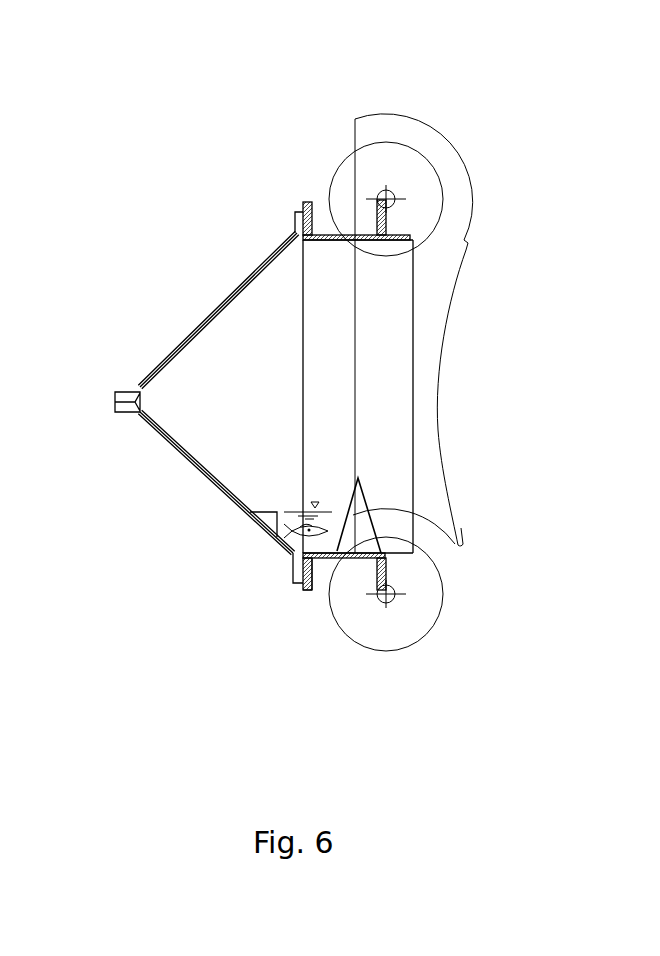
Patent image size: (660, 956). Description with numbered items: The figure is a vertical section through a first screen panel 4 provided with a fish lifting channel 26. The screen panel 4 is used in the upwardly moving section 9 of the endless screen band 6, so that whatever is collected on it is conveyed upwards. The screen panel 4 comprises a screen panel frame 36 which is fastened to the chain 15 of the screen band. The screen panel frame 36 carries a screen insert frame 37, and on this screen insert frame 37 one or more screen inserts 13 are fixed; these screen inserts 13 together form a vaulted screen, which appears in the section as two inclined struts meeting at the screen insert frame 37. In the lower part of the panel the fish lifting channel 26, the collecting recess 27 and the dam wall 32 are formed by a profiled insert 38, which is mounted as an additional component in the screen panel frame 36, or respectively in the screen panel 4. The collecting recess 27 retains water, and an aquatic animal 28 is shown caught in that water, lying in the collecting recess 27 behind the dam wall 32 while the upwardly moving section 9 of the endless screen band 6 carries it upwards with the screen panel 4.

The screen panel 4 is at (189, 329).
The endless screen band 6 is at (455, 188).
The upwardly moving section 9 is at (440, 138).
The screen inserts 13 is at (225, 297).
The chain 15 is at (443, 260).
The fish lifting channel 26 is at (277, 525).
The collecting recess 27 is at (322, 545).
The aquatic animal 28 is at (300, 538).
The dam wall 32 is at (362, 491).
The screen panel frame 36 is at (305, 203).
The screen insert frame 37 is at (295, 222).
The profiled insert 38 is at (370, 521).